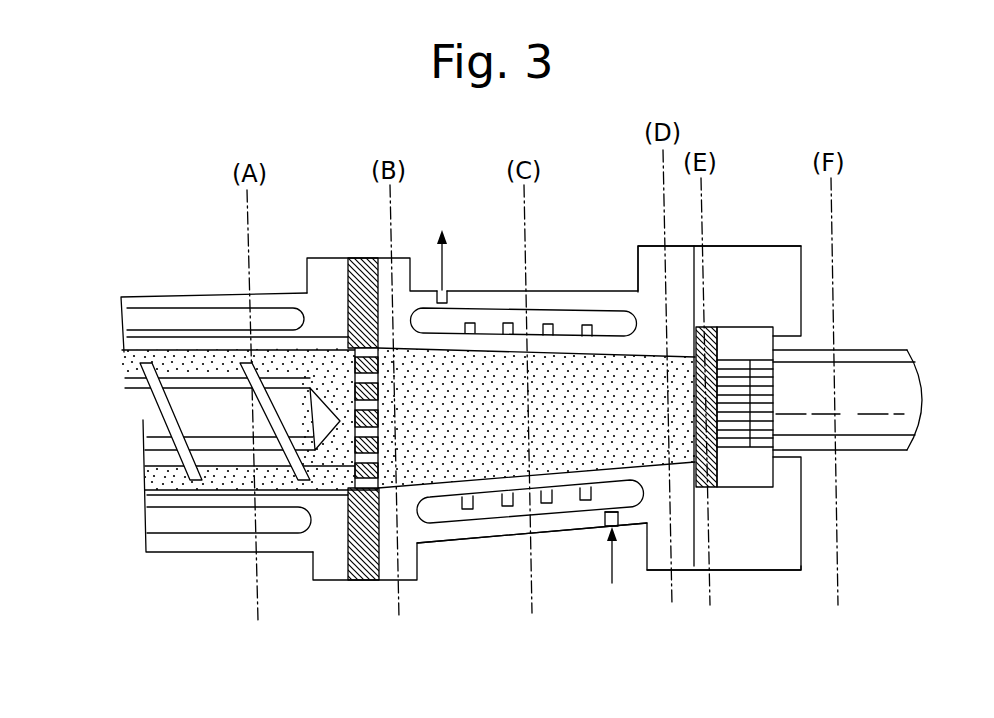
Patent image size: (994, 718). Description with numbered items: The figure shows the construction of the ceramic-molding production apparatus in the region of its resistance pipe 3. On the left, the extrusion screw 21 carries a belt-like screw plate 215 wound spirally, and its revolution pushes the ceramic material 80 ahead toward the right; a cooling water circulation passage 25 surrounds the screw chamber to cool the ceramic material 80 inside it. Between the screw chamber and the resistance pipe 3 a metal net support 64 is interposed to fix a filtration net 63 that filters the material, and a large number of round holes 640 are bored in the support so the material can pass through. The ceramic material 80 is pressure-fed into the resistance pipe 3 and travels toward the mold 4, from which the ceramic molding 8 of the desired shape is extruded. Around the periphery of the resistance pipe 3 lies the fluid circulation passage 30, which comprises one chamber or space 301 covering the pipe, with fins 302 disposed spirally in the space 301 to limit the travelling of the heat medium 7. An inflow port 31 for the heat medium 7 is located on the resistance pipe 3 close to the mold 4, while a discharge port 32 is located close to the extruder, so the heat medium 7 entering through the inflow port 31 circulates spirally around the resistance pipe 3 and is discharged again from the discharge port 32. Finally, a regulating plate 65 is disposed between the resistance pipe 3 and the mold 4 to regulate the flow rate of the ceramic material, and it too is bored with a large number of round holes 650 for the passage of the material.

The resistance pipe 3 is at (474, 262).
The mold 4 is at (760, 467).
The heat medium 7 is at (440, 293).
The ceramic molding 8 is at (882, 378).
The extrusion screw 21 is at (142, 447).
The cooling water circulation passage 25 is at (168, 525).
The fluid circulation passage 30 is at (572, 322).
The inflow port 31 is at (625, 525).
The discharge port 32 is at (378, 257).
The filtration net 63 is at (345, 470).
The metal net support 64 is at (348, 565).
The regulating plate 65 is at (710, 490).
The ceramic material 80 is at (200, 350).
The screw plate 215 is at (152, 402).
The space 301 is at (492, 508).
The fins 302 is at (474, 324).
The round holes 640 is at (347, 375).
The round holes 650 is at (717, 347).